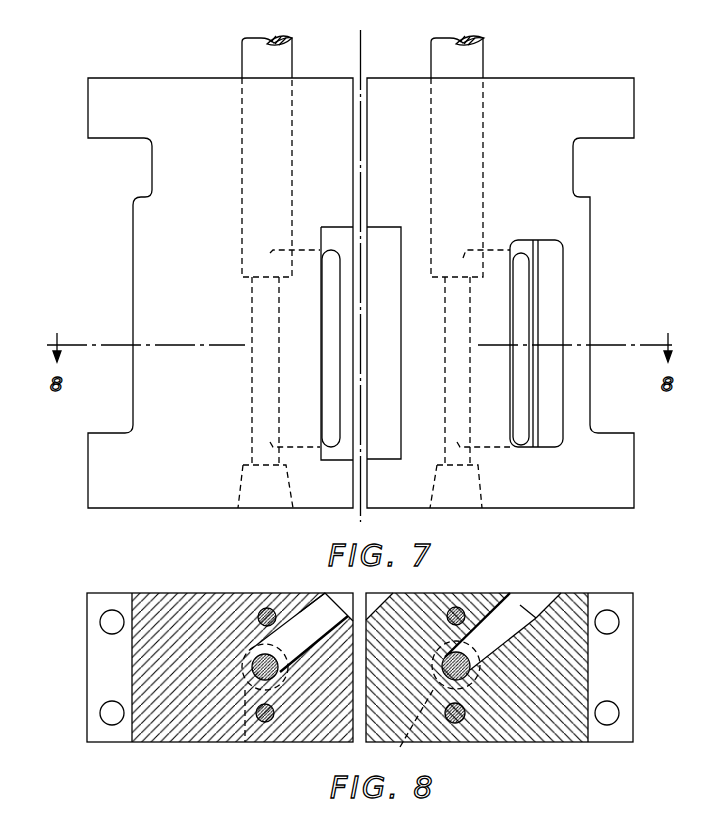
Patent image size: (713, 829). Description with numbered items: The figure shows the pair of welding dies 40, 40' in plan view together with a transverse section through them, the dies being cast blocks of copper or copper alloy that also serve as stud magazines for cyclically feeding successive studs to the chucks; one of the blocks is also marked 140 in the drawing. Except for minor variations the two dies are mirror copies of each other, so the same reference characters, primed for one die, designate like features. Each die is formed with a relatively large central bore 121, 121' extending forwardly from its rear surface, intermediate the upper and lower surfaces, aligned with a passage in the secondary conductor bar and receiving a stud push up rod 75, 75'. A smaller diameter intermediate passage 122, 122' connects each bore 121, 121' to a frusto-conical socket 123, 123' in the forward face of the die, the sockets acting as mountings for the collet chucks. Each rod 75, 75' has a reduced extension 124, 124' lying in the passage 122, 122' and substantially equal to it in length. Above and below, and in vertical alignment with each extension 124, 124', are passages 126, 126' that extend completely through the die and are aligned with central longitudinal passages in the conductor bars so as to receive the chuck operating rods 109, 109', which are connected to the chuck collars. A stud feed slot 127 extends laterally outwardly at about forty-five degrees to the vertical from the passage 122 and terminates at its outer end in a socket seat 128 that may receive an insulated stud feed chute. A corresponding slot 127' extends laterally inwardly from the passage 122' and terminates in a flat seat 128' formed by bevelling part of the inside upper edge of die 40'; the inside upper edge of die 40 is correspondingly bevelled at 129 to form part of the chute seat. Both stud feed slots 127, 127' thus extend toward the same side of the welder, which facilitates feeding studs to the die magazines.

In FIG. 8, the welding die 40 is at (520, 667).
In FIG. 7, the welding die 40' is at (195, 293).
In FIG. 8, the welding die 40' is at (220, 650).
In FIG. 7, the mold block 140 is at (624, 463).
In FIG. 7, the stud push up rod 75 is at (483, 57).
In FIG. 7, the stud push up rod 75' is at (289, 57).
In FIG. 8, the chuck operating rod 109 is at (475, 671).
In FIG. 8, the chuck operating rod 109' is at (291, 668).
In FIG. 7, the central bore 121 is at (495, 177).
In FIG. 8, the central bore 121 is at (440, 702).
In FIG. 7, the central bore 121' is at (236, 177).
In FIG. 8, the central bore 121' is at (265, 710).
In FIG. 7, the intermediate passage 122 is at (460, 357).
In FIG. 8, the intermediate passage 122 is at (490, 716).
In FIG. 7, the intermediate passage 122' is at (252, 357).
In FIG. 8, the intermediate passage 122' is at (228, 715).
In FIG. 7, the frusto-conical socket 123 is at (483, 487).
In FIG. 7, the frusto-conical socket 123' is at (231, 485).
In FIG. 8, the reduced extension 124 is at (490, 631).
In FIG. 8, the reduced extension 124' is at (299, 632).
In FIG. 8, the passage 126 is at (492, 595).
In FIG. 8, the passage 126' is at (246, 590).
In FIG. 7, the stud feed slot 127 is at (549, 369).
In FIG. 8, the stud feed slot 127 is at (545, 584).
In FIG. 7, the stud feed slot 127' is at (312, 348).
In FIG. 8, the stud feed slot 127' is at (329, 587).
In FIG. 7, the socket seat 128 is at (574, 343).
In FIG. 8, the socket seat 128 is at (578, 589).
In FIG. 7, the flat seat 128' is at (329, 324).
In FIG. 8, the flat seat 128' is at (369, 592).
In FIG. 7, the bevel 129 is at (383, 238).
In FIG. 8, the bevel 129 is at (389, 604).